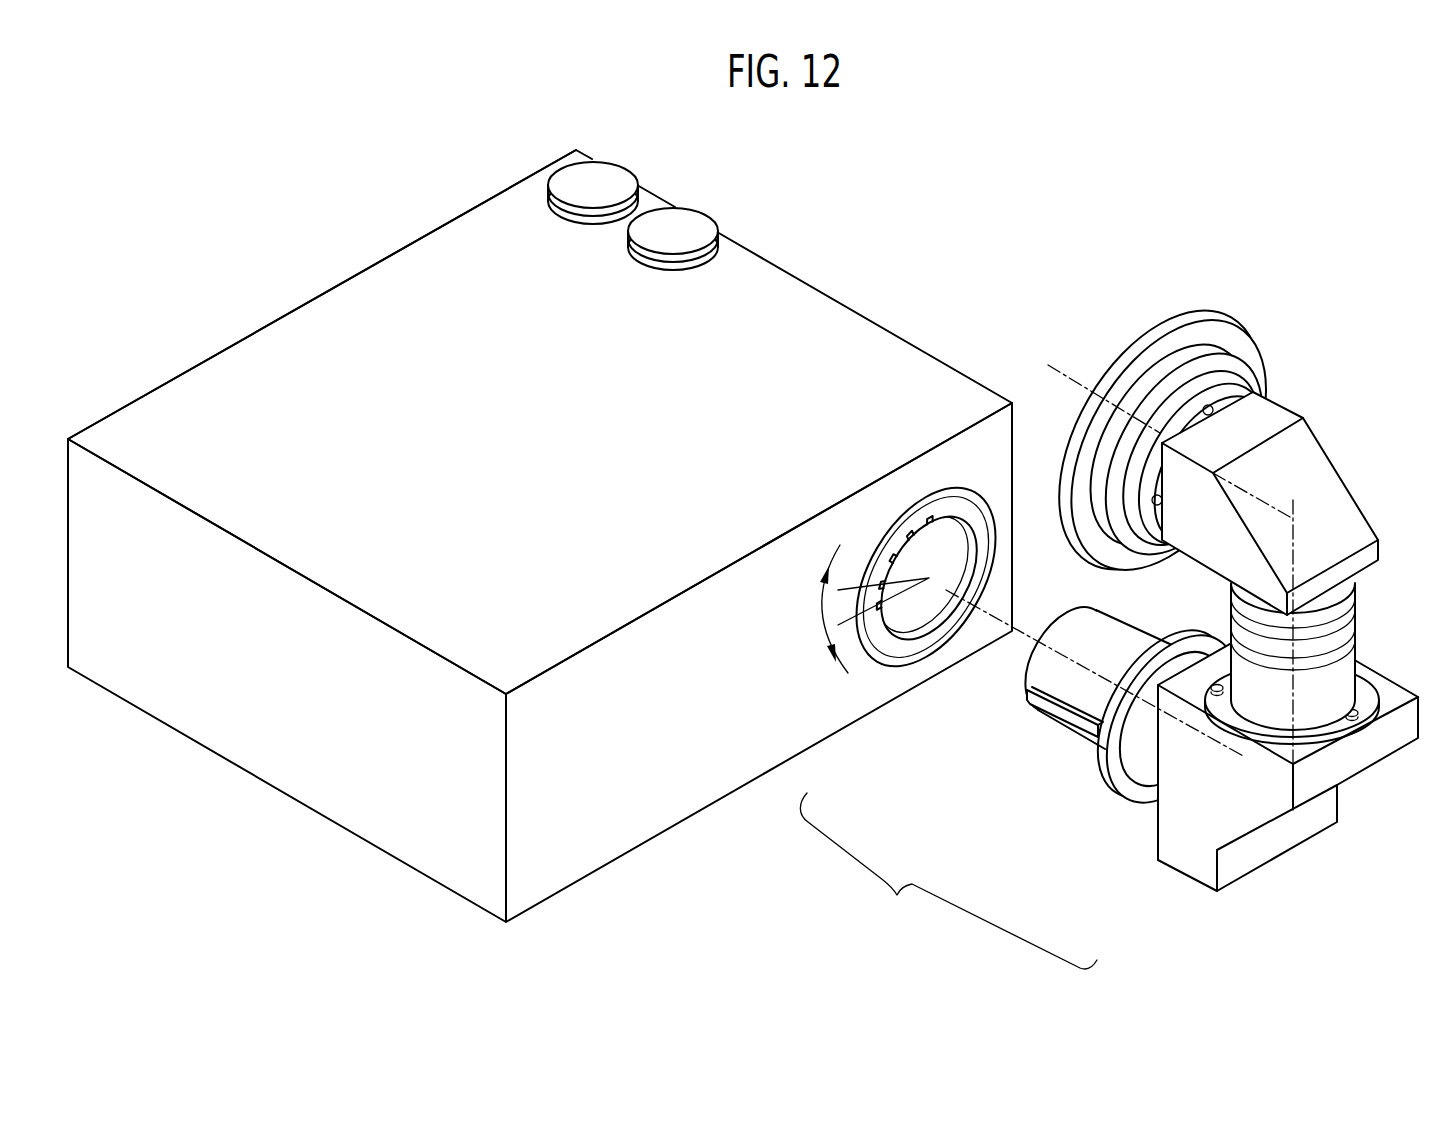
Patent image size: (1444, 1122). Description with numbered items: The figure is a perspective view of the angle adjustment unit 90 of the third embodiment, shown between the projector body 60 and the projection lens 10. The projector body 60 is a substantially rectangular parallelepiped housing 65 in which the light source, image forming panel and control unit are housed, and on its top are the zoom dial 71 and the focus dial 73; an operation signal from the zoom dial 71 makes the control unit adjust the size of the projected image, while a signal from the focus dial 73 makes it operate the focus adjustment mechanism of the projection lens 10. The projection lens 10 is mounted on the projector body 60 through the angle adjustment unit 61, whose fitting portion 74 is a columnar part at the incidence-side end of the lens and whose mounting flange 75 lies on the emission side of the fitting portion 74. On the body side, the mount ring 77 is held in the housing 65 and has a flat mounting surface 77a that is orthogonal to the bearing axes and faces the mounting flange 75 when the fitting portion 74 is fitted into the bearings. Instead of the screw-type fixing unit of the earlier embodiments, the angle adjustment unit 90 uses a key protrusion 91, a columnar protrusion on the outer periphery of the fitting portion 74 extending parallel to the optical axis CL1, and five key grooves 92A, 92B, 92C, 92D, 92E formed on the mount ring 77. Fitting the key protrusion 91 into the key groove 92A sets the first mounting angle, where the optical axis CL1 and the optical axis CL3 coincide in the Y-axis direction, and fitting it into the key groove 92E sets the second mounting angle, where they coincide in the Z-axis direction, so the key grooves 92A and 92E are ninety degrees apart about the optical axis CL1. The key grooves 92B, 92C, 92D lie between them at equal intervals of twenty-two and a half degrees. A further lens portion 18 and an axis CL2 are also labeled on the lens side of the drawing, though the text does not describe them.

The projection lens 10 is at (1362, 391).
The head portion 18 is at (1335, 524).
The projector body 60 is at (369, 283).
The angle adjustment unit 61 is at (1165, 900).
The housing 65 is at (235, 375).
The zoom dial 71 is at (683, 222).
The focus dial 73 is at (573, 187).
The fitting portion 74 is at (1097, 648).
The mounting flange 75 is at (1183, 631).
The mount ring 77 is at (916, 521).
The mounting surface 77a is at (983, 531).
The angle adjustment unit 90 is at (948, 881).
The key protrusion 91 is at (1063, 718).
The key groove 92A is at (880, 605).
The key groove 92B is at (883, 585).
The key groove 92C is at (895, 560).
The key groove 92D is at (911, 537).
The key groove 92E is at (930, 520).
The optical axis CL1 is at (1222, 750).
The center line CL2 is at (1331, 616).
The optical axis CL3 is at (1072, 372).